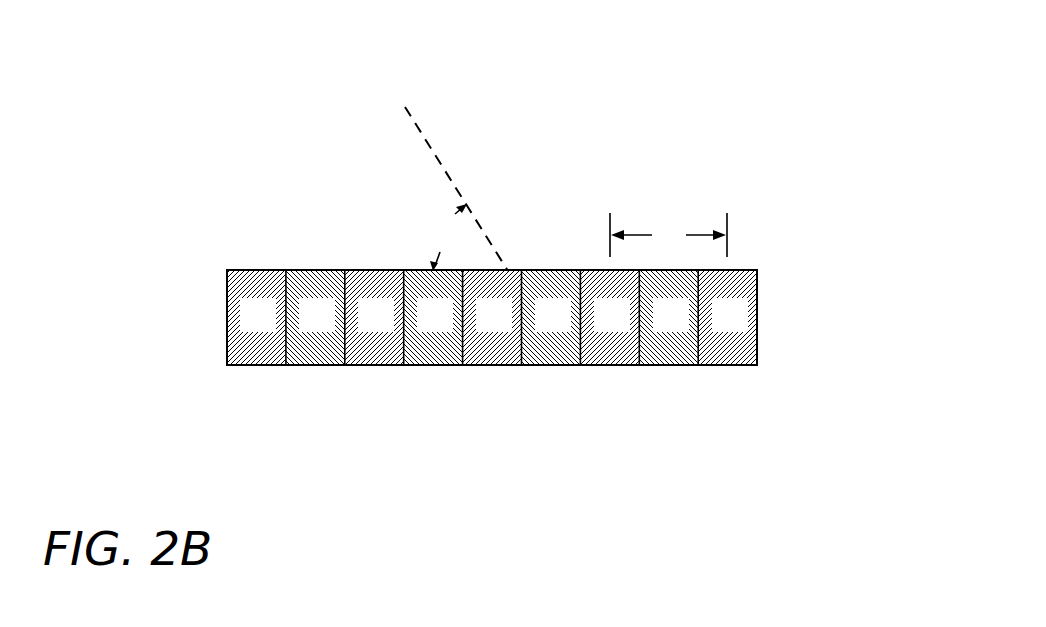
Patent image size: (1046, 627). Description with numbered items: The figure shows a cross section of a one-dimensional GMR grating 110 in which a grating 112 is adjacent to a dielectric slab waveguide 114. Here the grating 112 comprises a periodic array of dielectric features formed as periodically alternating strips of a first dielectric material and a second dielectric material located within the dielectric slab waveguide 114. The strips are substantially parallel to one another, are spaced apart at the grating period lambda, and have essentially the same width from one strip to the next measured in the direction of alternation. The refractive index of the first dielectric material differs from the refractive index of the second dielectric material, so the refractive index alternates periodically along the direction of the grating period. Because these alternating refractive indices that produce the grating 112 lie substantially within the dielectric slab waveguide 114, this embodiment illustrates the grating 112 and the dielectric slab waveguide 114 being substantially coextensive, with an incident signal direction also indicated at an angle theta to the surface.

The guided mode resonance (GMR) grating 110 is at (546, 205).
The grating 112 is at (328, 250).
The dielectric slab waveguide 114 is at (758, 316).